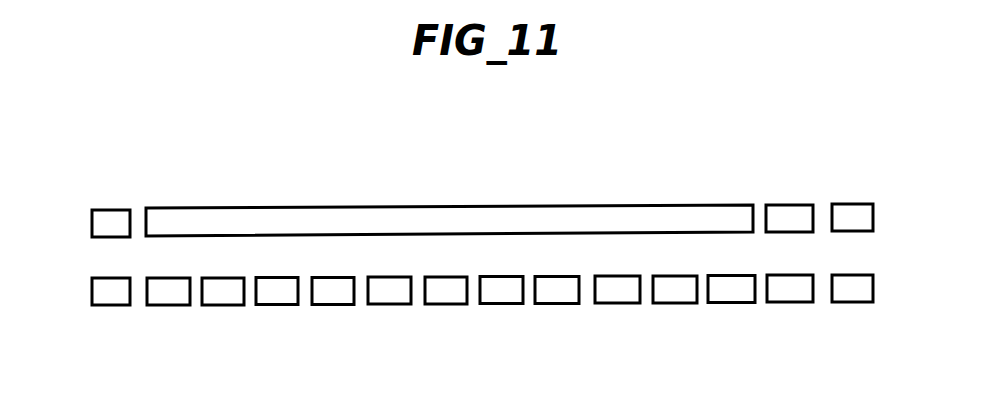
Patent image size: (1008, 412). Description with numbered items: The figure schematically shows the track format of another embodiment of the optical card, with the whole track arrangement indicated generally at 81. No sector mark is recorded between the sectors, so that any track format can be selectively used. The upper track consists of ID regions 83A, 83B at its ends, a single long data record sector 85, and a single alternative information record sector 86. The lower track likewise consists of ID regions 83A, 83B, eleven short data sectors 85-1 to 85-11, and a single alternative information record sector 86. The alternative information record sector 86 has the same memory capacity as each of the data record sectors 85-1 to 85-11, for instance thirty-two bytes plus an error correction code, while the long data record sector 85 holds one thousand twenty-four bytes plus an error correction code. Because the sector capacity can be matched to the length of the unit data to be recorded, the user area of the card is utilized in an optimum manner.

The electrode assembly 81 is at (613, 197).
The data record sector 85 is at (418, 214).
The data record sector 85-1 is at (167, 293).
The data record sector 85-11 is at (730, 293).
The ID region 83A is at (97, 282).
The ID region 83B is at (865, 283).
The alternative information record sector 86 is at (793, 210).